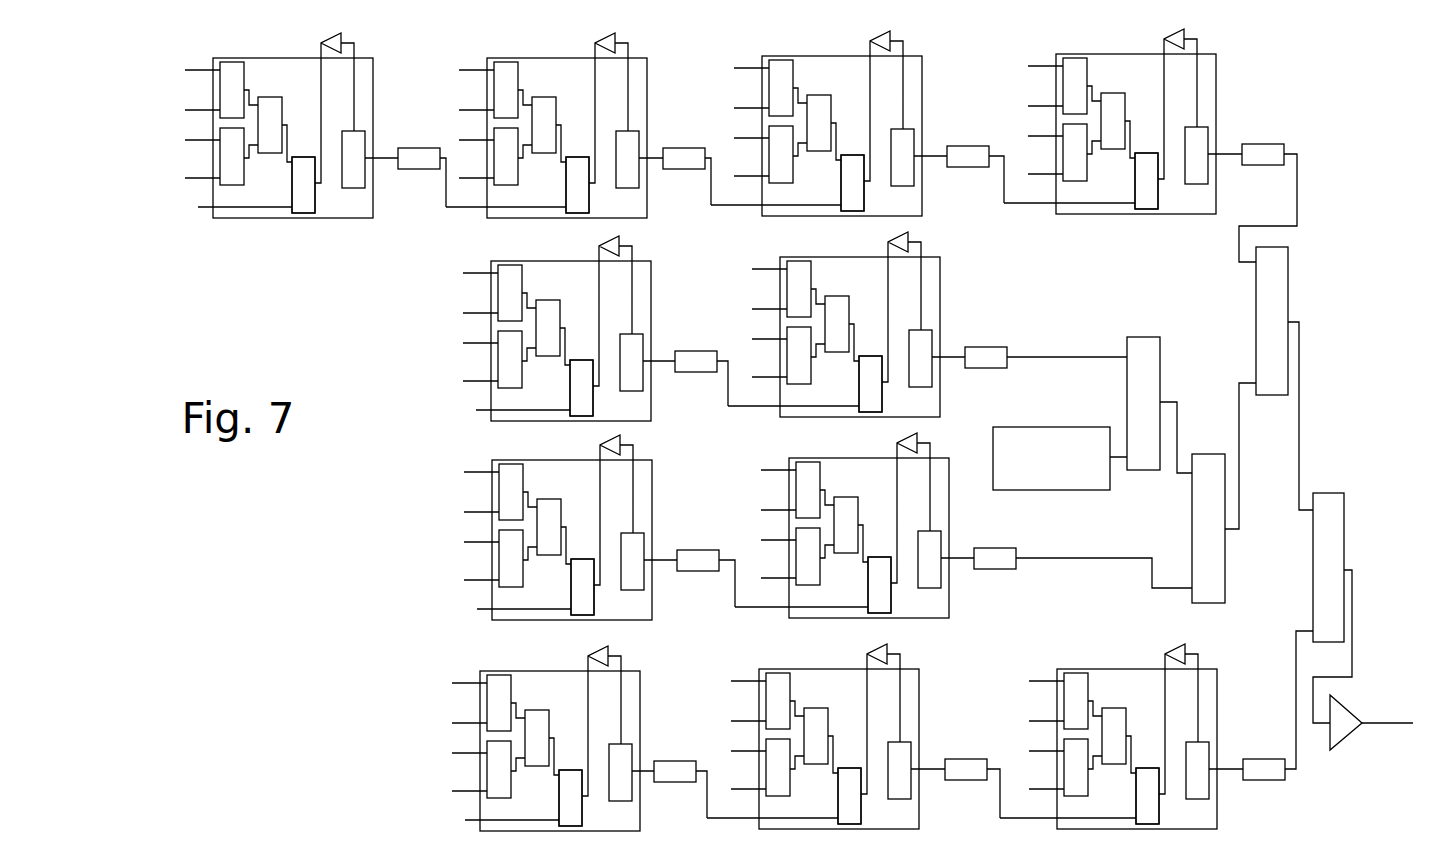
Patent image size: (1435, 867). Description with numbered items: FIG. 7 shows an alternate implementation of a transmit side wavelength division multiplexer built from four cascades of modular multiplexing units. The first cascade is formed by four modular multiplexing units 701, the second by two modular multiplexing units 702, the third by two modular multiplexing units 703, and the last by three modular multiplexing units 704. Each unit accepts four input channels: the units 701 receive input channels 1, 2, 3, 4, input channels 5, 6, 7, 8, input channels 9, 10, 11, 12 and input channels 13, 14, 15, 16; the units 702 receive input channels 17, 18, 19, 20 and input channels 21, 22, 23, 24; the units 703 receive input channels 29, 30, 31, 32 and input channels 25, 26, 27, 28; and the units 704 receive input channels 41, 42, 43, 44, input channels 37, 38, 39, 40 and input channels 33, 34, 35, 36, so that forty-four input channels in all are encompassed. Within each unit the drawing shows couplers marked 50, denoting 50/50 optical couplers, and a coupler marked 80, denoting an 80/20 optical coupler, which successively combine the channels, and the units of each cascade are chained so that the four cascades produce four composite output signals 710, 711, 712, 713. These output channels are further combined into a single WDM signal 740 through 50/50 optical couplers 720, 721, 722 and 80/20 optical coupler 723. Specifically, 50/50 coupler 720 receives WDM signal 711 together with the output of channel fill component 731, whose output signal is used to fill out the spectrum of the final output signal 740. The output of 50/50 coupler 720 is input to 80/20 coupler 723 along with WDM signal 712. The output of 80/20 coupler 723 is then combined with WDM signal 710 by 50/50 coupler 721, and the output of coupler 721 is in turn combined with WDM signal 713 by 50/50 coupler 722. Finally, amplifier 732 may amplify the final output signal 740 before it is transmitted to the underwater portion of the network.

The input channel 1 is at (196, 70).
The input channel 2 is at (196, 110).
The input channel 3 is at (196, 140).
The input channel 4 is at (196, 178).
The input channel 5 is at (470, 70).
The input channel 6 is at (470, 110).
The input channel 7 is at (470, 140).
The input channel 8 is at (470, 178).
The input channel 9 is at (745, 68).
The input channel 10 is at (740, 108).
The input channel 11 is at (740, 138).
The input channel 12 is at (740, 176).
The input channel 13 is at (1034, 66).
The input channel 14 is at (1034, 106).
The input channel 15 is at (1034, 136).
The input channel 16 is at (1034, 174).
The input channel 17 is at (469, 273).
The input channel 18 is at (469, 313).
The input channel 19 is at (469, 343).
The input channel 20 is at (725, 490).
The input channel 21 is at (758, 269).
The input channel 22 is at (758, 309).
The input channel 23 is at (758, 339).
The input channel 24 is at (758, 377).
The input channel 25 is at (767, 470).
The input channel 26 is at (767, 510).
The input channel 27 is at (767, 540).
The input channel 28 is at (767, 578).
The input channel 29 is at (470, 472).
The input channel 30 is at (470, 512).
The input channel 31 is at (470, 542).
The input channel 32 is at (470, 580).
The input channel 33 is at (1035, 681).
The input channel 34 is at (1035, 721).
The input channel 35 is at (1035, 751).
The input channel 36 is at (1035, 789).
The input channel 37 is at (737, 681).
The input channel 38 is at (737, 721).
The input channel 39 is at (737, 751).
The input channel 40 is at (737, 789).
The input channel 41 is at (458, 683).
The input channel 42 is at (458, 723).
The input channel 43 is at (458, 753).
The input channel 44 is at (458, 791).
The 50/50 optical coupler 50 is at (673, 428).
The 80/20 optical coupler 80 is at (725, 489).
The modular multiplexing unit 701 is at (728, 123).
The modular multiplexing unit 702 is at (723, 326).
The modular multiplexing unit 703 is at (728, 526).
The modular multiplexing unit 704 is at (857, 737).
The composite output signal 710 is at (1297, 156).
The composite output signal 711 is at (1046, 357).
The composite output signal 712 is at (1050, 558).
The composite output signal 713 is at (1293, 752).
The 50/50 optical coupler 720 is at (1160, 340).
The 50/50 optical coupler 721 is at (1288, 262).
The 50/50 optical coupler 722 is at (1344, 494).
The 80/20 optical coupler 723 is at (1204, 455).
The channel fill component 731 is at (1058, 427).
The amplifier 732 is at (1357, 720).
The WDM signal 740 is at (1392, 724).